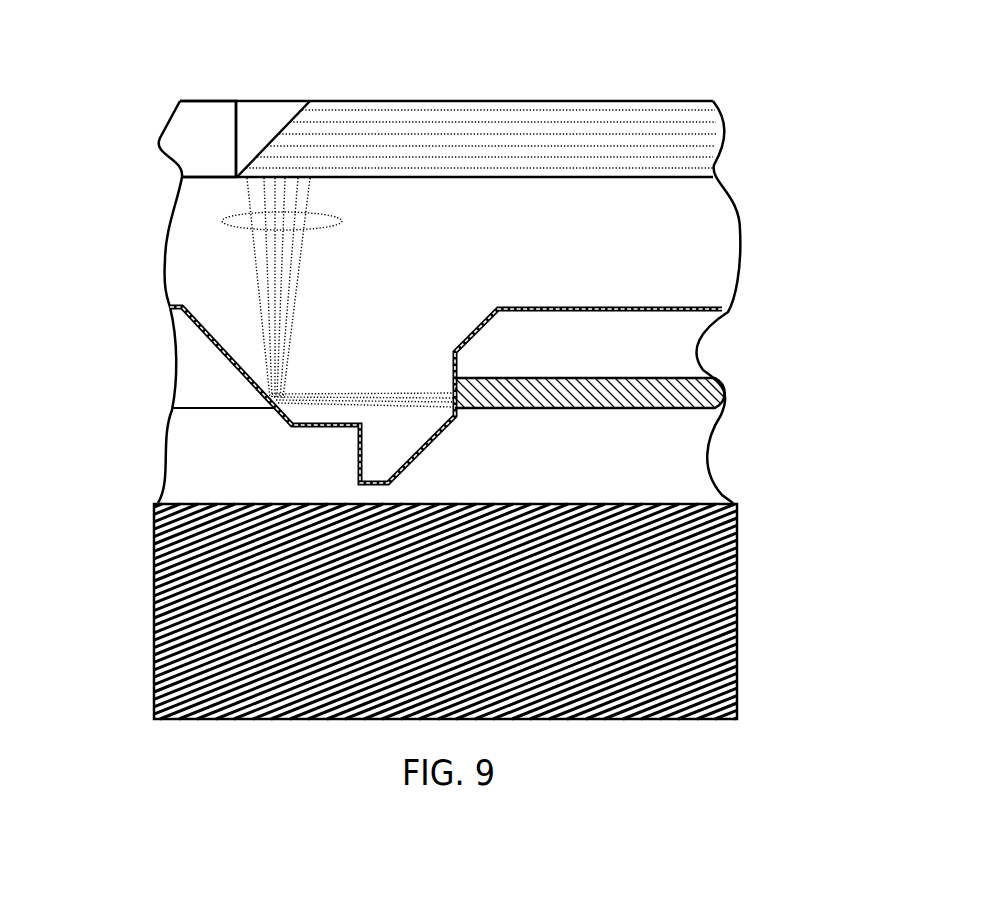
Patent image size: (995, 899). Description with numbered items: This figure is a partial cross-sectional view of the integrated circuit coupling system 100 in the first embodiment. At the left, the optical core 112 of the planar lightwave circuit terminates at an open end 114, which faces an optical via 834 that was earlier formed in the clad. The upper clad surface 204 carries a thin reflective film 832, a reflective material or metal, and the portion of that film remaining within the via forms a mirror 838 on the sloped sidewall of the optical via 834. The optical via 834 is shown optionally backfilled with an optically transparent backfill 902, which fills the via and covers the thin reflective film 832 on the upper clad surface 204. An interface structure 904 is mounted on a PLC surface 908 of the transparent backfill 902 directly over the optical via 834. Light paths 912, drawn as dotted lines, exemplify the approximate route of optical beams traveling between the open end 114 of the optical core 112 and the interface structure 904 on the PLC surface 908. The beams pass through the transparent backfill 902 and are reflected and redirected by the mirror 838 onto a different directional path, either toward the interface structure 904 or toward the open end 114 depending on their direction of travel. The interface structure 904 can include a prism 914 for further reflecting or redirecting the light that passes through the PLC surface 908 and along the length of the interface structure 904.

The integrated circuit coupling system 100 is at (750, 316).
The optical core 112 is at (750, 393).
The open end 114 is at (453, 382).
The upper clad surface 204 is at (731, 306).
The thin reflective film 832 is at (690, 309).
The optical via 834 is at (231, 277).
The mirror 838 is at (202, 300).
The transparent backfill 902 is at (449, 302).
The interface structure 904 is at (208, 139).
The PLC surface 908 is at (693, 177).
The light paths 912 is at (222, 219).
The prism 914 is at (273, 139).